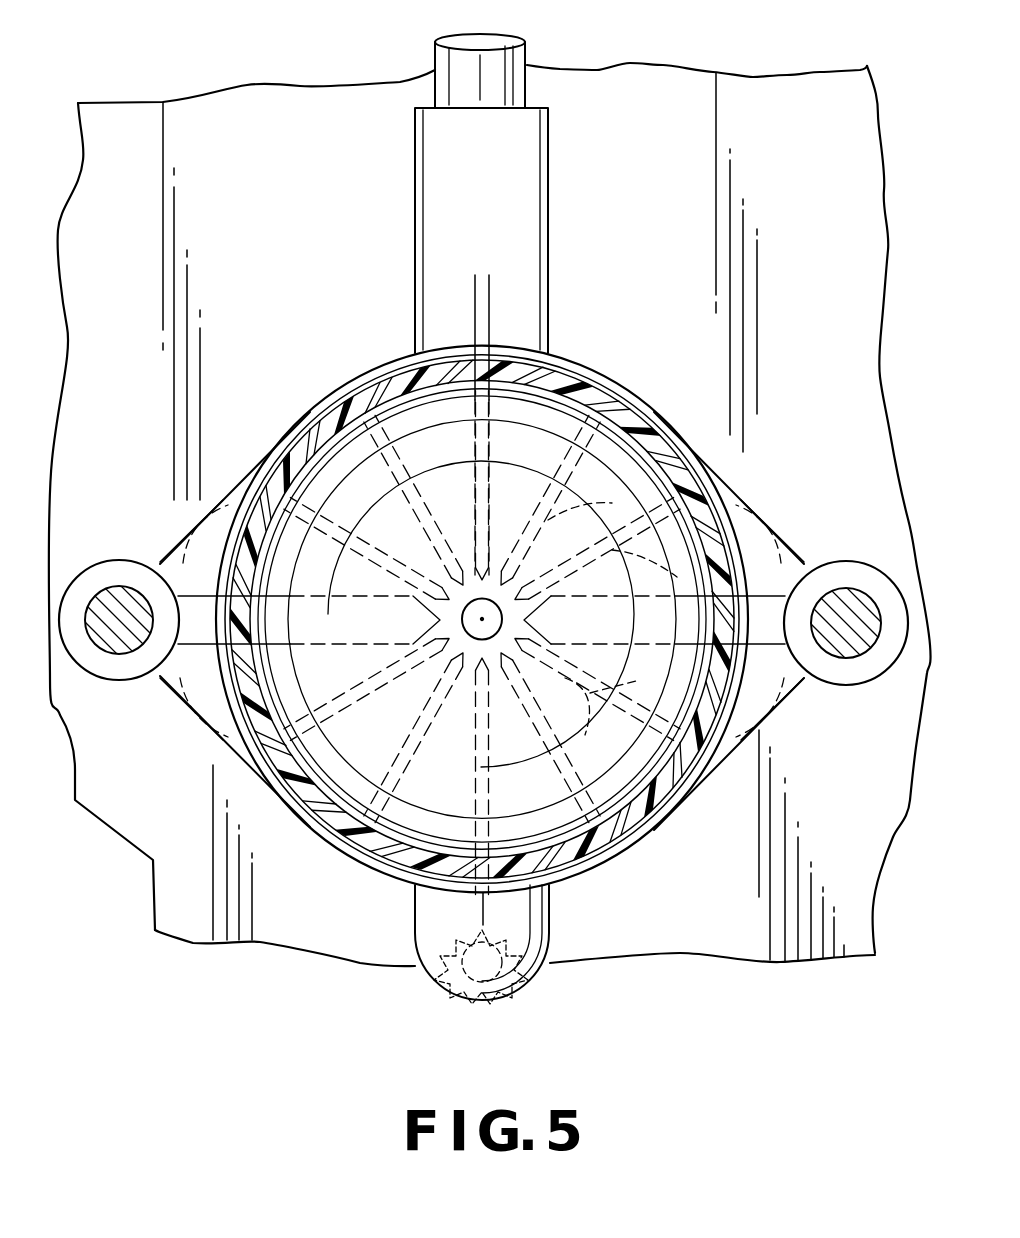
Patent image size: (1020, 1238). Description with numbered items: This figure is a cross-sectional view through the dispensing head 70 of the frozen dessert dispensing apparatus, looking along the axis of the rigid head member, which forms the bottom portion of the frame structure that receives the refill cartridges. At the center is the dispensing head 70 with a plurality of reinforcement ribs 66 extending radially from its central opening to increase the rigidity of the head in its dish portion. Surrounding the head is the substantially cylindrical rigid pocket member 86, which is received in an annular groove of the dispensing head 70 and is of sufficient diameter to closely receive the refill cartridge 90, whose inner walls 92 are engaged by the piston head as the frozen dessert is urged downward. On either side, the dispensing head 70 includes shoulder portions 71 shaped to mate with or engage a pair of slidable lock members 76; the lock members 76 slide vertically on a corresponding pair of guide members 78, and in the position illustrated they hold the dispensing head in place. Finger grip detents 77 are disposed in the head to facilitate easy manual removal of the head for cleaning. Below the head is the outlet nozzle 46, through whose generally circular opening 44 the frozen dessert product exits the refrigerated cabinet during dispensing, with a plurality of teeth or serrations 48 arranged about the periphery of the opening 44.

The opening 44 is at (484, 1000).
The outlet nozzle 46 is at (452, 986).
The teeth or serrations 48 is at (522, 988).
The reinforcement ribs 66 is at (588, 512).
The dispensing head 70 is at (482, 593).
The shoulder portions 71 is at (183, 533).
The lock members 76 is at (105, 577).
The finger grip detents 77 is at (213, 517).
The guide members 78 is at (113, 633).
The pocket member 86 is at (482, 612).
The refill cartridge 90 is at (482, 619).
The inner walls 92 is at (522, 619).